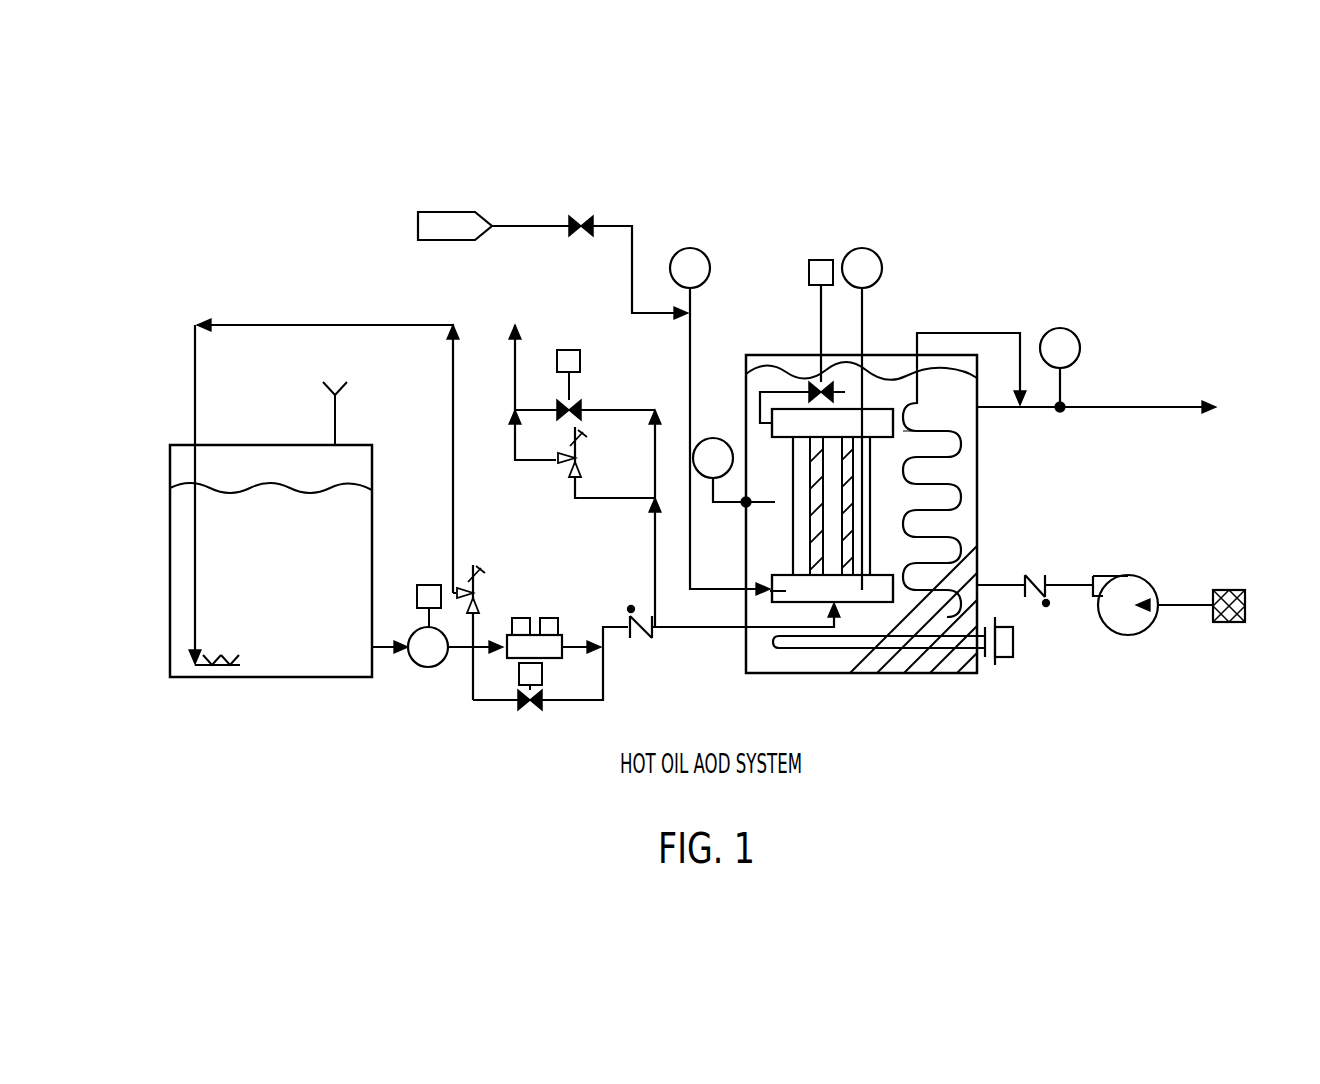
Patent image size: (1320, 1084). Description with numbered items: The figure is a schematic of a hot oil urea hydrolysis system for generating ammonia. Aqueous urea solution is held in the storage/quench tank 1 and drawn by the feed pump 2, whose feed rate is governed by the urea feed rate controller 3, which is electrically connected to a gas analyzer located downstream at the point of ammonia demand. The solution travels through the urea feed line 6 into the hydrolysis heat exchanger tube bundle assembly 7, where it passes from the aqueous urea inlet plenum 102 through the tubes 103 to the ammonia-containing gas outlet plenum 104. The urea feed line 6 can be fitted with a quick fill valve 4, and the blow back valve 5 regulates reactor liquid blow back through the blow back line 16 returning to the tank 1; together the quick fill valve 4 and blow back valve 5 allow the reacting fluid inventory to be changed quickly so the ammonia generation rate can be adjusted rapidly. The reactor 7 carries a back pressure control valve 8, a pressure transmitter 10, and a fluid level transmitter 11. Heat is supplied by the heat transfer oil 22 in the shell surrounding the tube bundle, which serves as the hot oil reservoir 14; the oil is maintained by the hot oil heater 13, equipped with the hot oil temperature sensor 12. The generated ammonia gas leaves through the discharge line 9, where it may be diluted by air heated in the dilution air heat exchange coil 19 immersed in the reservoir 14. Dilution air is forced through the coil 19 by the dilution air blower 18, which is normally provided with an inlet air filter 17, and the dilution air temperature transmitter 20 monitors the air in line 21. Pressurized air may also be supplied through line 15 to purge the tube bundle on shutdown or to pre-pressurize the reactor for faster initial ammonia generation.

The aqueous urea solution storage/quench tank 1 is at (228, 678).
The feed pump 2 is at (432, 668).
The urea feed rate controller 3 is at (535, 632).
The quick fill valve 4 is at (548, 705).
The blow back valve 5 is at (572, 392).
The urea feed line 6 is at (710, 630).
The hydrolysis heat exchanger tube bundle assembly 7 is at (785, 516).
The back pressure control valve 8 is at (813, 385).
The discharge line 9 is at (968, 330).
The pressure transmitter 10 is at (694, 297).
The fluid level transmitter 11 is at (865, 305).
The hot oil temperature sensor 12 is at (714, 438).
The hot oil heater 13 is at (1000, 665).
The hot oil reservoir 14 is at (977, 460).
The pressurized air line 15 is at (541, 225).
The blow back line 16 is at (317, 323).
The inlet air filter 17 is at (1228, 588).
The dilution air blower 18 is at (1130, 577).
The dilution air heat exchange coil 19 is at (960, 500).
The dilution air temperature transmitter 20 is at (1063, 385).
The dilution air line 21 is at (1160, 405).
The heat transfer oil 22 is at (927, 612).
The aqueous urea inlet plenum 102 is at (785, 593).
The tubes 103 is at (960, 552).
The ammonia-containing gas outlet plenum 104 is at (787, 420).